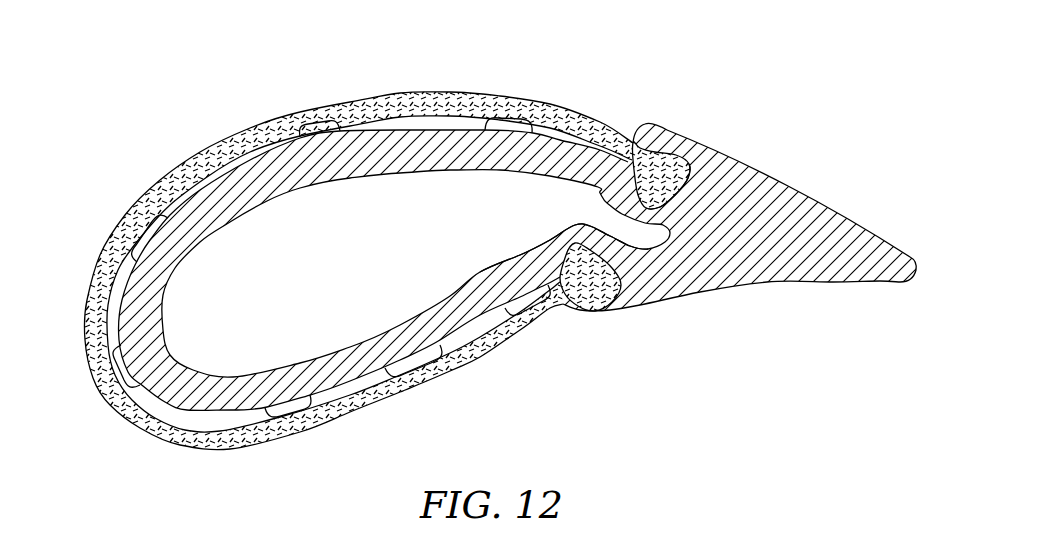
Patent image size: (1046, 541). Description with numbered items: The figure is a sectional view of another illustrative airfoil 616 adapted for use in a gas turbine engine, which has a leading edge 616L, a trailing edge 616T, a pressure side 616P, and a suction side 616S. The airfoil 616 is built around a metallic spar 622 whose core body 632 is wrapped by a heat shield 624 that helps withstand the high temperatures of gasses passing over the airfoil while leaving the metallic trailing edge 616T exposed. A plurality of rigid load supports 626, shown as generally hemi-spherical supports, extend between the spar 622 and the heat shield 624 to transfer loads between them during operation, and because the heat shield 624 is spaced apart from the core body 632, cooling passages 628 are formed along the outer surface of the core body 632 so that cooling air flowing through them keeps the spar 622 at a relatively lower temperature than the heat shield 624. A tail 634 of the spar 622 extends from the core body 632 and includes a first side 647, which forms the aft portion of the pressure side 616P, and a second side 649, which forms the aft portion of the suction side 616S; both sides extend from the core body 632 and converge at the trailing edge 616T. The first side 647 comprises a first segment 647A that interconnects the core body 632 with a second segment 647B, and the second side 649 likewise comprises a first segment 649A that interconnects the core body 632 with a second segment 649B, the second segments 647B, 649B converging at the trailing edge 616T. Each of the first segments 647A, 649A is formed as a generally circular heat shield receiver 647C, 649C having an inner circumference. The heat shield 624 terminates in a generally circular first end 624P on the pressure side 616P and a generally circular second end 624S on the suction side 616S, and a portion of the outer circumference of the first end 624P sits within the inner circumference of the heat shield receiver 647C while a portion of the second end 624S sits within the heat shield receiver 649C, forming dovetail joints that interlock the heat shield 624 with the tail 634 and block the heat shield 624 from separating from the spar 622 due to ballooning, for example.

The airfoil 616 is at (130, 100).
The suction side 616S is at (520, 95).
The pressure side 616P is at (478, 362).
The leading edge 616L is at (80, 325).
The trailing edge 616T is at (918, 268).
The spar 622 is at (413, 122).
The heat shield 624 is at (222, 450).
The second end 624S is at (642, 172).
The first end 624P is at (585, 302).
The rigid load supports 626 is at (312, 120).
The cooling passages 628 is at (200, 163).
The core body 632 is at (420, 350).
The tail 634 is at (897, 288).
The first side 647 is at (780, 288).
The first segment 647A is at (620, 310).
The second segment 647B is at (843, 288).
The heat shield receiver 647C is at (587, 308).
The second side 649 is at (807, 188).
The first segment 649A is at (670, 137).
The second segment 649B is at (838, 200).
The heat shield receiver 649C is at (660, 158).